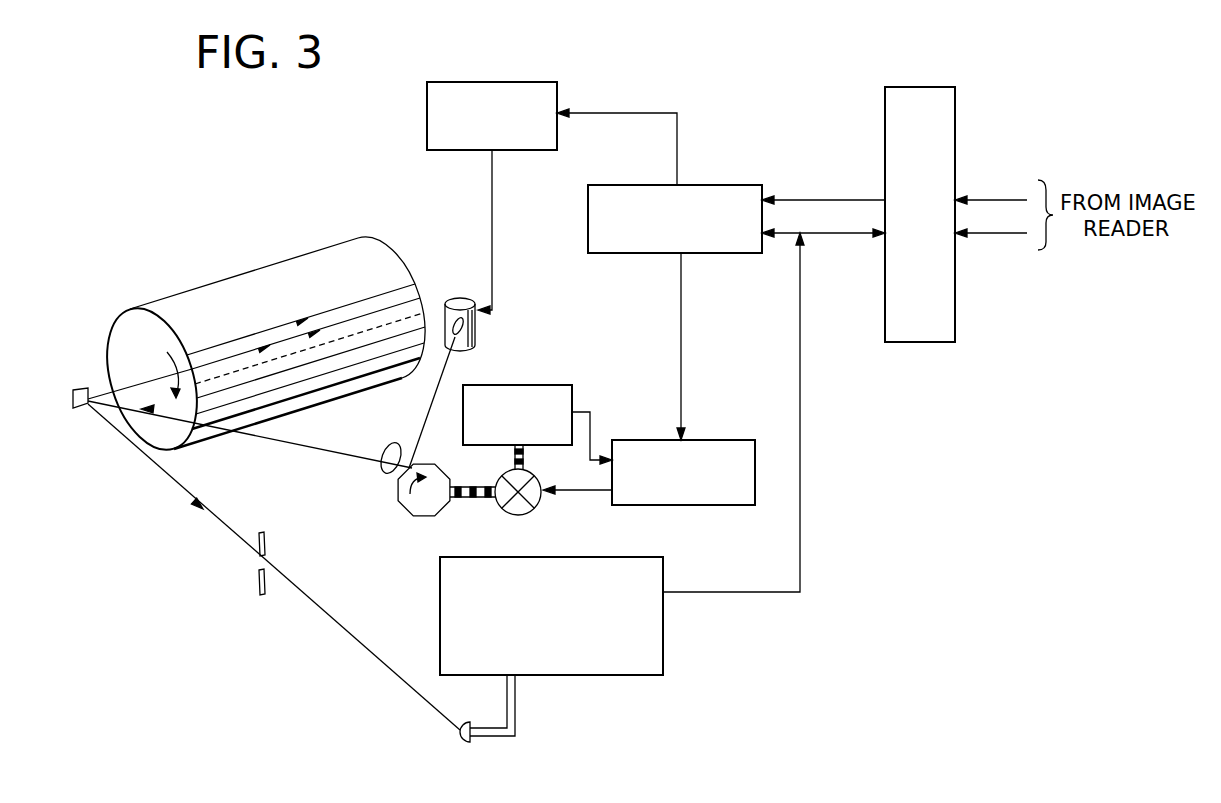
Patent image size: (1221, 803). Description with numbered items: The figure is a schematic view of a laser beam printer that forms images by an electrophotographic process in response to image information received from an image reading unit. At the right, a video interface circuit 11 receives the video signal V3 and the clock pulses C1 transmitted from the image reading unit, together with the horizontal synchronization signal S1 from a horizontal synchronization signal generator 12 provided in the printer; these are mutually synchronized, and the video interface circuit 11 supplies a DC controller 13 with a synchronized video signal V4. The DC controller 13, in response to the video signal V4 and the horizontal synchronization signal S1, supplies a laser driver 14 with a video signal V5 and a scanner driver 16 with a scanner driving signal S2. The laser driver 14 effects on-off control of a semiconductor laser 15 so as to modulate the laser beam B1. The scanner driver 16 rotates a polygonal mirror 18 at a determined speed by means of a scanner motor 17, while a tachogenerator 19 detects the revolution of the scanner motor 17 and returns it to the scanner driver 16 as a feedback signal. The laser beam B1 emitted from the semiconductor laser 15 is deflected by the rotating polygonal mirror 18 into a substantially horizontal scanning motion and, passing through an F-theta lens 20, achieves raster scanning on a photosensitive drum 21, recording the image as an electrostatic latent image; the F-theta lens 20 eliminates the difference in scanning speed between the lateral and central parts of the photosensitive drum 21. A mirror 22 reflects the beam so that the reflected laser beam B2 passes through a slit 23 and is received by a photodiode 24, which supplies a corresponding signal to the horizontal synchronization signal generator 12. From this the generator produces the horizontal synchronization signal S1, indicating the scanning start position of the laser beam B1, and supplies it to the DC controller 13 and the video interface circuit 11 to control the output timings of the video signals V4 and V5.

The video interface circuit 11 is at (923, 87).
The horizontal synchronization signal generator 12 is at (663, 633).
The DC controller 13 is at (723, 185).
The laser driver 14 is at (514, 82).
The semiconductor laser 15 is at (458, 298).
The scanner driver 16 is at (713, 440).
The scanner motor 17 is at (540, 506).
The polygonal mirror 18 is at (415, 518).
The tachogenerator 19 is at (522, 385).
The F-theta lens 20 is at (385, 470).
The photosensitive drum 21 is at (343, 246).
The mirror 22 is at (81, 388).
The slit 23 is at (262, 532).
The photodiode 24 is at (458, 733).
The laser beam B1 is at (430, 403).
The reflected laser beam B2 is at (186, 487).
The video signal V3 is at (1003, 200).
The video signal V4 is at (831, 200).
The video signal V5 is at (621, 112).
The clock pulses C1 is at (995, 234).
The horizontal synchronization signal S1 is at (745, 592).
The scanner driving signal S2 is at (680, 295).